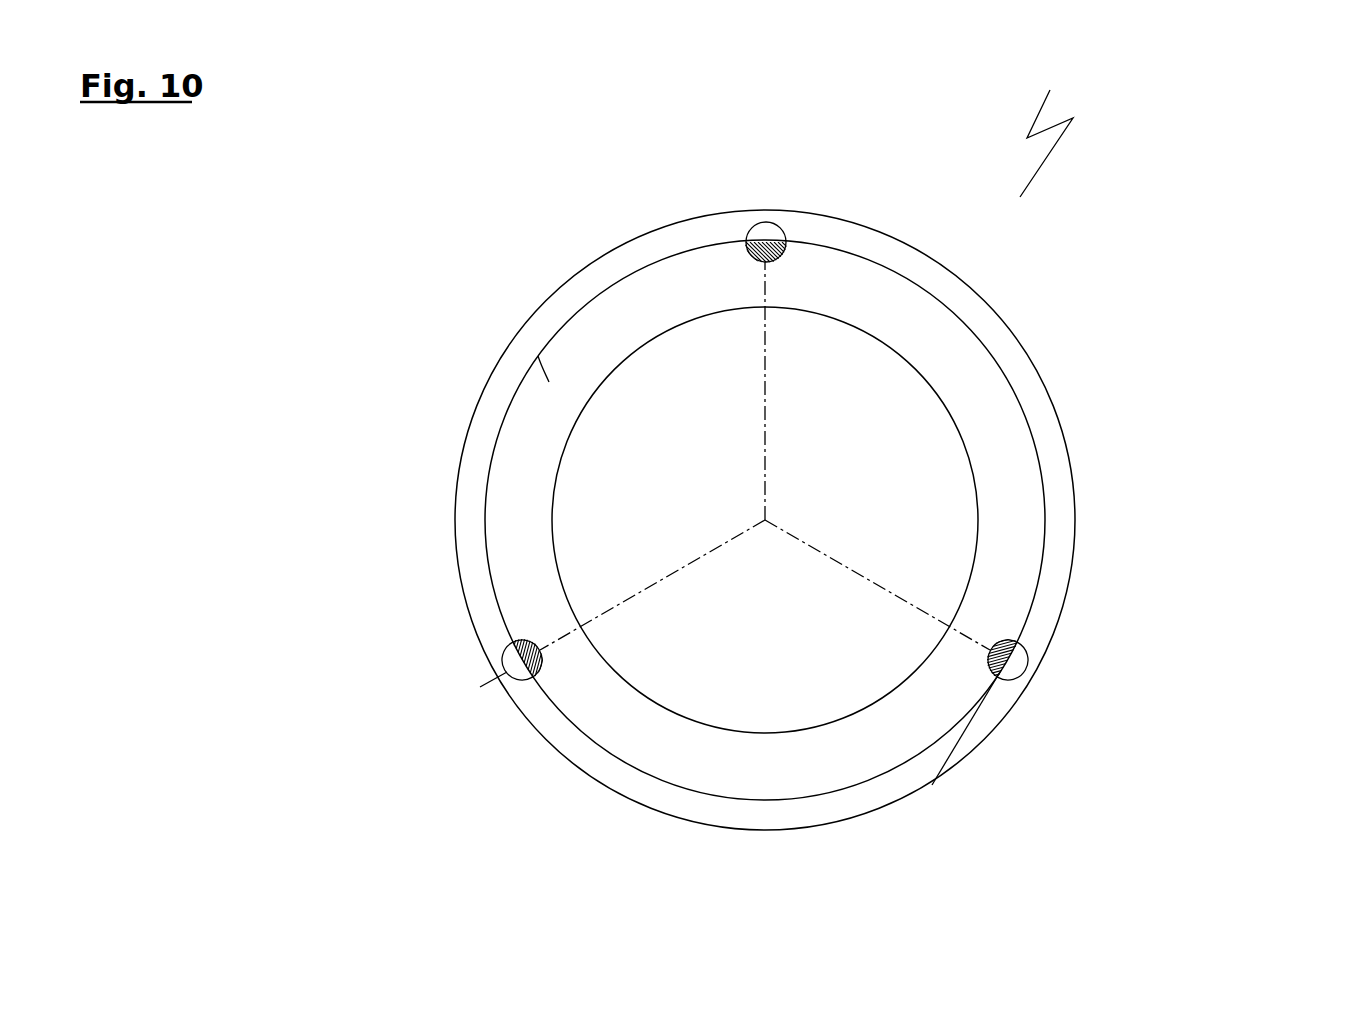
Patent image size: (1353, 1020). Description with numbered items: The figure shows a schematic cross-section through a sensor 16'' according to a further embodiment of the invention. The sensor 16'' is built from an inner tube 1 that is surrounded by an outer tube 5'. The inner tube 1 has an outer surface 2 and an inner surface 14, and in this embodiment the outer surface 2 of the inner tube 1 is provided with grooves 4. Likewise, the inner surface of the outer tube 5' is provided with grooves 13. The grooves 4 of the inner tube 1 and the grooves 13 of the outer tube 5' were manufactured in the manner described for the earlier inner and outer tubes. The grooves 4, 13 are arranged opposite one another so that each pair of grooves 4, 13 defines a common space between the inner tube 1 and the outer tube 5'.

The inner tube 1 is at (860, 725).
The outer surface of the inner tube 2 is at (1050, 343).
The groove in the outer surface of the inner tube 4 is at (752, 252).
The groove in the inner surface of the outer tube 13 is at (770, 228).
The inner surface of the inner tube 14 is at (733, 708).
The outer tube 5' is at (1154, 652).
The sensor 16'' is at (1051, 124).